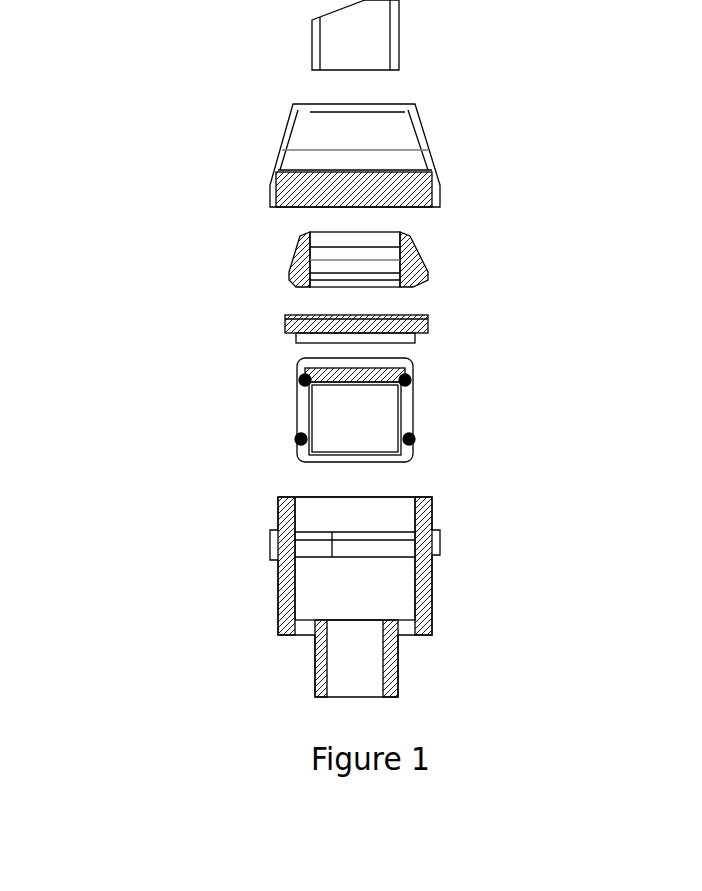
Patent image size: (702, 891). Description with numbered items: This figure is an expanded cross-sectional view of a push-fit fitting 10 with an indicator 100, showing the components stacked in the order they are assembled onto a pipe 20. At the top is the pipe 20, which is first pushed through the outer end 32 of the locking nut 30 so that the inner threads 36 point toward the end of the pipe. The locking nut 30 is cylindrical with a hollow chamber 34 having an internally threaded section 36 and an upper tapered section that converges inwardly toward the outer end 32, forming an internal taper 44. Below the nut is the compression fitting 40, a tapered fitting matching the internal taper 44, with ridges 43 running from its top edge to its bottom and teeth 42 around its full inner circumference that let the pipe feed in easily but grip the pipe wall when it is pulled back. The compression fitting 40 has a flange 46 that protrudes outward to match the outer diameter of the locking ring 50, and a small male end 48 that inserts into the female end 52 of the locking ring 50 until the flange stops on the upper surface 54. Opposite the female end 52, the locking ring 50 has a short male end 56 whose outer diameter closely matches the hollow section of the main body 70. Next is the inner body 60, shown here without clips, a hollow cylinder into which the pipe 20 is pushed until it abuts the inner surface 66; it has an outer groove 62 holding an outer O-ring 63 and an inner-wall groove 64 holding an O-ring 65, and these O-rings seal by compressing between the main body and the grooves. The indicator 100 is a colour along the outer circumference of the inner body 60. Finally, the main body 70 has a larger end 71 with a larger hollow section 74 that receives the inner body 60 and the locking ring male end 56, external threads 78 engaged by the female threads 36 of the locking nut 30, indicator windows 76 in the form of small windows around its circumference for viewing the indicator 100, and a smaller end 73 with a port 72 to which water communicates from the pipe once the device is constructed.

The push-fit fitting 10 is at (125, 292).
The pipe 20 is at (425, 38).
The locking nut 30 is at (450, 150).
The outer end 32 is at (335, 102).
The hollow chamber 34 is at (300, 142).
The inner threads 36 is at (300, 170).
The compression fitting 40 is at (455, 256).
The teeth 42 is at (290, 252).
The ridges 43 is at (408, 238).
The internal taper 44 is at (372, 262).
The flange 46 is at (292, 286).
The male end 48 is at (300, 292).
The locking ring 50 is at (462, 322).
The female end 52 is at (300, 340).
The upper surface 54 is at (312, 322).
The male end 56 is at (312, 365).
The inner body 60 is at (345, 418).
The outer groove 62 is at (300, 425).
The outer O-ring 63 is at (300, 442).
The inner groove 64 is at (300, 408).
The inner O-ring 65 is at (305, 378).
The inner surface 66 is at (410, 424).
The indicator 100 is at (413, 385).
The main body 70 is at (465, 522).
The larger end 71 is at (400, 490).
The port 72 is at (425, 622).
The smaller end 73 is at (410, 669).
The larger hollow section 74 is at (355, 578).
The indicator window 76 is at (440, 556).
The external threads 78 is at (312, 663).